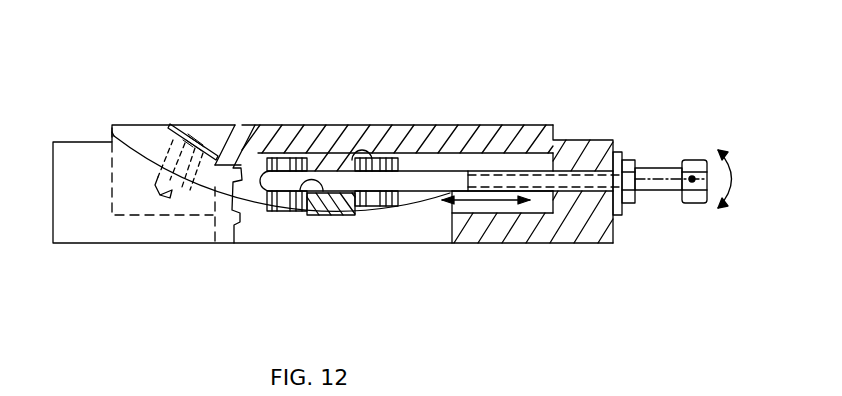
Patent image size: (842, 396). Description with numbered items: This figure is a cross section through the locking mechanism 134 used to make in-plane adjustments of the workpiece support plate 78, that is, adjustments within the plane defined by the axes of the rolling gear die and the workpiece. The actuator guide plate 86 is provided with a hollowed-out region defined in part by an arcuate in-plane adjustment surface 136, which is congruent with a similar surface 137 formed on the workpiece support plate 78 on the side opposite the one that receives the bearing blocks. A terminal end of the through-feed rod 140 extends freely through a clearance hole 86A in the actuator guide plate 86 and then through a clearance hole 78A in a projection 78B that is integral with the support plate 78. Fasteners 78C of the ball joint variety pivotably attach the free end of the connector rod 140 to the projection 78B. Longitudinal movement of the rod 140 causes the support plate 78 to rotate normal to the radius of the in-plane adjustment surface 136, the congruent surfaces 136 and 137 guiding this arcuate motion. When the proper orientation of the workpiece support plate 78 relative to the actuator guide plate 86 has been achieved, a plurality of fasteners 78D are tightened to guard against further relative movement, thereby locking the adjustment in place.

The locking mechanism 134 is at (187, 262).
The arcuate in-plane adjustment surface 136 is at (139, 150).
The fasteners 78D is at (197, 128).
The projection 78B is at (330, 205).
The workpiece support plate 78 is at (510, 197).
The fasteners of the ball joint variety 78C is at (370, 152).
The clearance hole 78A is at (287, 205).
The surface 137 is at (424, 207).
The actuator guide plate 86 is at (583, 232).
The clearance hole 86A is at (582, 180).
The through-feed rod 140 is at (650, 170).